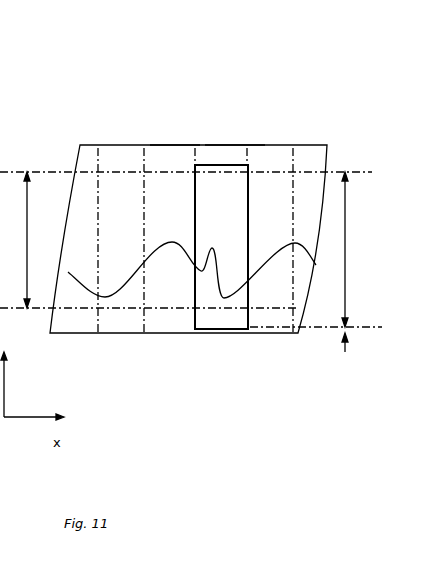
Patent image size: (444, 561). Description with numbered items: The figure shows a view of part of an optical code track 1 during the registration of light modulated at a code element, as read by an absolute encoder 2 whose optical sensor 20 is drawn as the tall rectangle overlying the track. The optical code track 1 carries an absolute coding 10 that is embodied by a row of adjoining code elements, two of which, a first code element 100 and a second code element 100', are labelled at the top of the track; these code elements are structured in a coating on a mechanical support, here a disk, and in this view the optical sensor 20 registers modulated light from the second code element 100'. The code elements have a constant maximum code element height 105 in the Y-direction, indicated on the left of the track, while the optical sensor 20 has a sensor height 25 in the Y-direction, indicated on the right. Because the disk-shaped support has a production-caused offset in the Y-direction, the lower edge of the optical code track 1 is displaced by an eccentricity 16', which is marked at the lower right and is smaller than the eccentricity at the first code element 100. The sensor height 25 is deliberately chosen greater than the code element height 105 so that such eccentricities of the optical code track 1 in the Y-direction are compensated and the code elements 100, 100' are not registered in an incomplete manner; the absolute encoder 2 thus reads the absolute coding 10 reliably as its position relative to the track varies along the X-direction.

The optical code track 1 is at (179, 223).
The absolute coding 10 is at (123, 145).
The first code element 100 is at (176, 122).
The second code element 100' is at (235, 122).
The absolute encoder 2 is at (221, 289).
The optical sensor 20 is at (229, 333).
The maximum code element height 105 is at (22, 240).
The sensor height 25 is at (346, 249).
The eccentricity 16' is at (372, 338).